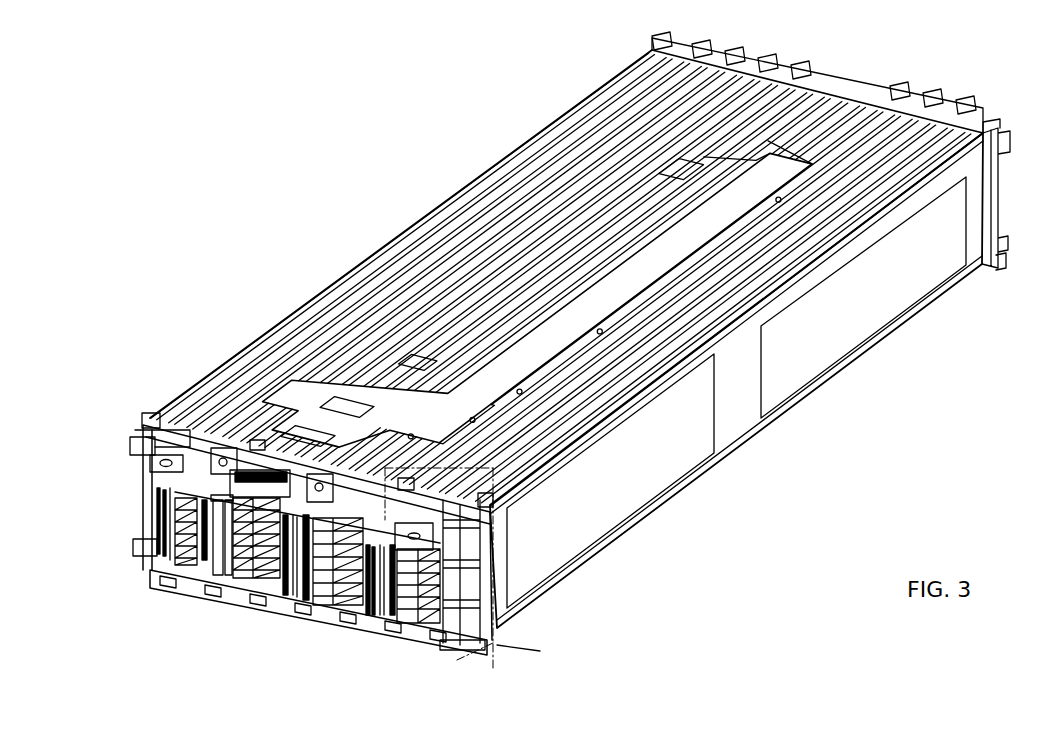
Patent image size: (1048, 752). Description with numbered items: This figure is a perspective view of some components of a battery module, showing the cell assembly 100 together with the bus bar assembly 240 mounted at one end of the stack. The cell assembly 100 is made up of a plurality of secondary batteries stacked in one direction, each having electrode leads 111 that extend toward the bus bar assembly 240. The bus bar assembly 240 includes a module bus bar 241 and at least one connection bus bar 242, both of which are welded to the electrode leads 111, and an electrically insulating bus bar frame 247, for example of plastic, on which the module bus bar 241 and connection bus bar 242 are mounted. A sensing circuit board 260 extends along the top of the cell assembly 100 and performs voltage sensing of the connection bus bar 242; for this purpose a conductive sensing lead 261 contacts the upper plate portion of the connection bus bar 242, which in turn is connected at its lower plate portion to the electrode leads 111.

The cell assembly 100 is at (537, 372).
The electrode lead 111 is at (152, 525).
The bus bar assembly 240 is at (340, 541).
The module bus bar 241 is at (143, 461).
The connection bus bar 242 is at (205, 582).
The bus bar frame 247 is at (165, 577).
The sensing circuit board 260 is at (647, 268).
The sensing lead 261 is at (355, 502).